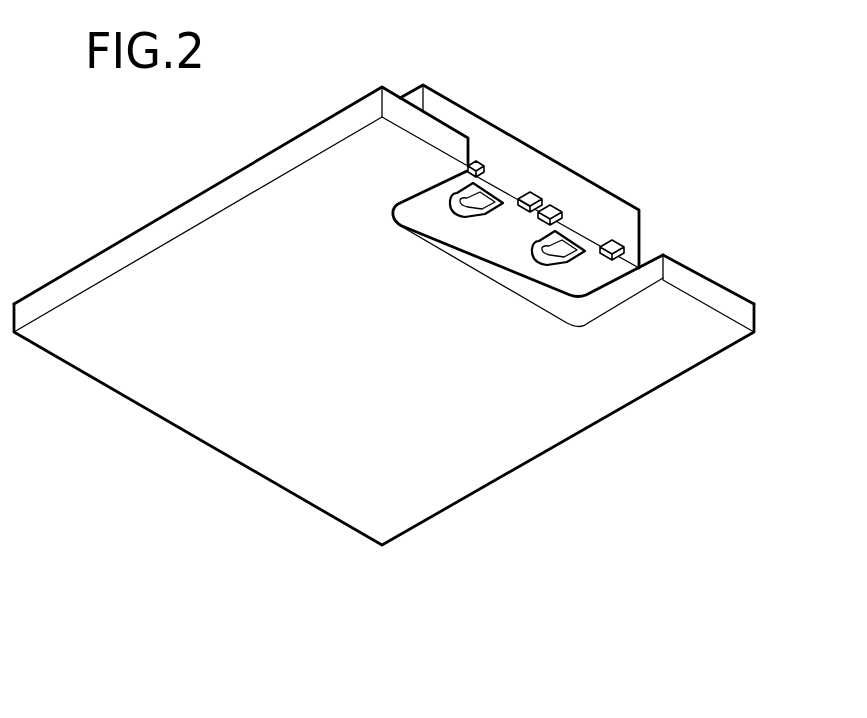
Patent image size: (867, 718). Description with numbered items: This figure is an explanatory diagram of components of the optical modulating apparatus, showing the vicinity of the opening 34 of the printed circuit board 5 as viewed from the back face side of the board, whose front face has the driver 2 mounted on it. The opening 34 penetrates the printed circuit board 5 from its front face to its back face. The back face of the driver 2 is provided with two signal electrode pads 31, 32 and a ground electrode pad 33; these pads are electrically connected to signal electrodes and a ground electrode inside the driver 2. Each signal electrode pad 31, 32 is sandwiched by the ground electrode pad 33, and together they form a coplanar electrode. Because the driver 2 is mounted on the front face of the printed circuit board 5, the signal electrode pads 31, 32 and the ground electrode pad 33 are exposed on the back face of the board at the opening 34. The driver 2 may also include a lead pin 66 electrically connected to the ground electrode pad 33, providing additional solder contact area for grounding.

The driver 2 is at (434, 87).
The printed circuit board 5 is at (190, 204).
The signal electrode pad 31 is at (482, 200).
The signal electrode pad 32 is at (570, 243).
The ground electrode pad 33 is at (510, 237).
The opening 34 is at (658, 268).
The lead pin 66 is at (614, 243).